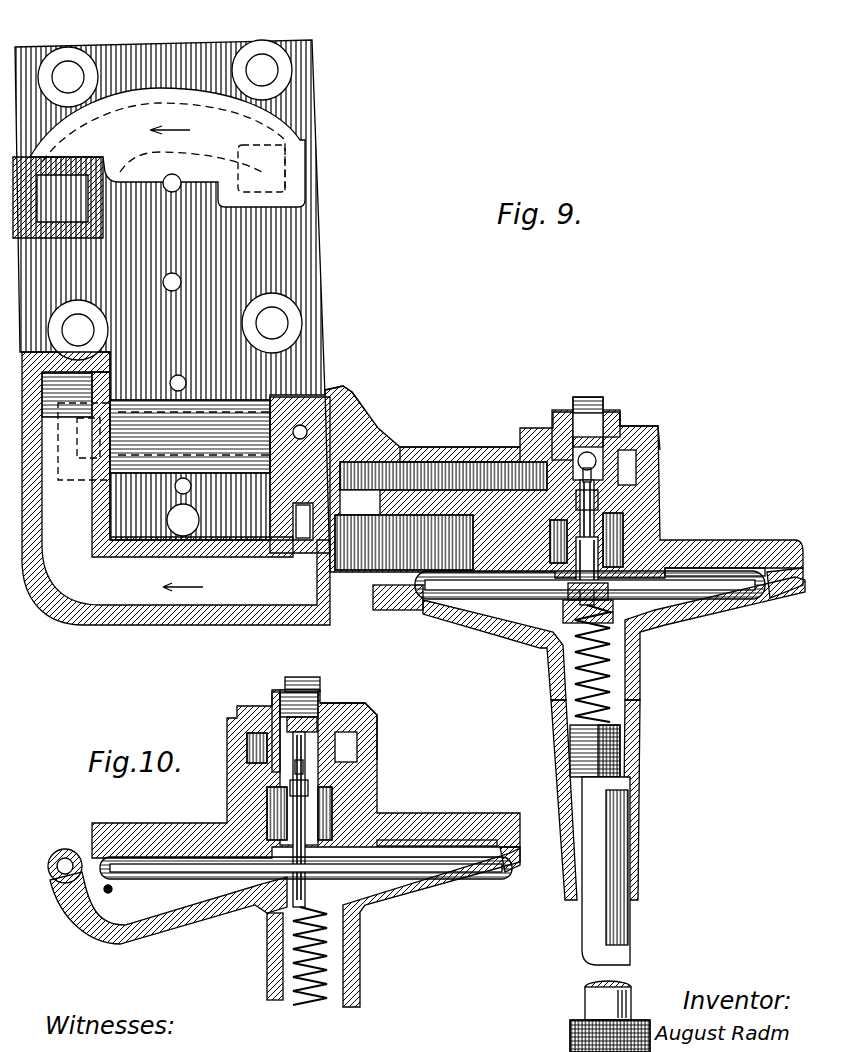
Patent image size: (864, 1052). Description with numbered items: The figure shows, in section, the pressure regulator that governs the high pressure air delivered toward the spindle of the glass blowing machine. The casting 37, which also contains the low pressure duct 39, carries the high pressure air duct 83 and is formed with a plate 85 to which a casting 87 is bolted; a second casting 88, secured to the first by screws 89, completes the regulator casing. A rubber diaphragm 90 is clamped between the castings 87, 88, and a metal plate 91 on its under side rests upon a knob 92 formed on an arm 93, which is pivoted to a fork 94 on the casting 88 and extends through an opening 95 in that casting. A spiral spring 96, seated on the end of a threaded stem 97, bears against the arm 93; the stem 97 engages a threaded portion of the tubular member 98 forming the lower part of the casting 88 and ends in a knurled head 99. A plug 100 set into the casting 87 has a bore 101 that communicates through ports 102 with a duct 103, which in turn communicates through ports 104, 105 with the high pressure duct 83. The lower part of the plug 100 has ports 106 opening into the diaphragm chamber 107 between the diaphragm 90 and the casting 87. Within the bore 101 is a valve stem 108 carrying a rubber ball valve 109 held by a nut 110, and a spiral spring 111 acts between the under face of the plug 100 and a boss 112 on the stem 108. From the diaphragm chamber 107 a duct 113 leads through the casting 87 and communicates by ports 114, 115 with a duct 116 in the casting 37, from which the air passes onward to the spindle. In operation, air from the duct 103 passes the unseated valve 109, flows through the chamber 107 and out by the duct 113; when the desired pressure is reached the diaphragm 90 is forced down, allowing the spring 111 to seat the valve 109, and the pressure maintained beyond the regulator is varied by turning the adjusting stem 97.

In FIG. 9, the casting 37 is at (318, 246).
In FIG. 9, the duct 39 is at (165, 100).
In FIG. 9, the duct 83 is at (213, 420).
In FIG. 9, the plate 85 is at (293, 468).
In FIG. 9, the casting 87 is at (477, 447).
In FIG. 9, the casting 88 is at (520, 628).
In FIG. 10, the casting 88 is at (306, 868).
In FIG. 9, the screws 89 is at (393, 611).
In FIG. 10, the screws 89 is at (507, 874).
In FIG. 9, the rubber diaphragm 90 is at (740, 580).
In FIG. 10, the rubber diaphragm 90 is at (467, 872).
In FIG. 9, the metal plate 91 is at (700, 588).
In FIG. 10, the metal plate 91 is at (423, 868).
In FIG. 9, the knob 92 is at (606, 610).
In FIG. 10, the arm 93 is at (203, 917).
In FIG. 10, the fork 94 is at (67, 849).
In FIG. 10, the opening 95 is at (270, 927).
In FIG. 9, the spiral spring 96 is at (577, 673).
In FIG. 10, the spiral spring 96 is at (330, 934).
In FIG. 9, the threaded stem 97 is at (630, 823).
In FIG. 9, the tubular member 98 is at (630, 854).
In FIG. 9, the knurled head 99 is at (570, 1034).
In FIG. 9, the plug 100 is at (610, 427).
In FIG. 10, the plug 100 is at (330, 688).
In FIG. 9, the bore 101 is at (598, 492).
In FIG. 10, the bore 101 is at (310, 787).
In FIG. 9, the ports 102 is at (567, 468).
In FIG. 9, the duct 103 is at (413, 480).
In FIG. 9, the port 104 is at (330, 413).
In FIG. 9, the port 105 is at (293, 429).
In FIG. 9, the ports 106 is at (457, 580).
In FIG. 9, the diaphragm chamber 107 is at (633, 473).
In FIG. 10, the diaphragm chamber 107 is at (313, 757).
In FIG. 9, the valve stem 108 is at (607, 490).
In FIG. 10, the valve stem 108 is at (317, 773).
In FIG. 9, the rubber ball valve 109 is at (607, 450).
In FIG. 10, the rubber ball valve 109 is at (327, 713).
In FIG. 9, the nut 110 is at (553, 437).
In FIG. 10, the nut 110 is at (273, 710).
In FIG. 9, the spiral spring 111 is at (624, 538).
In FIG. 10, the spiral spring 111 is at (340, 810).
In FIG. 9, the boss 112 is at (612, 590).
In FIG. 10, the boss 112 is at (240, 830).
In FIG. 9, the duct 113 is at (377, 527).
In FIG. 9, the port 114 is at (317, 542).
In FIG. 9, the port 115 is at (313, 540).
In FIG. 9, the duct 116 is at (85, 510).